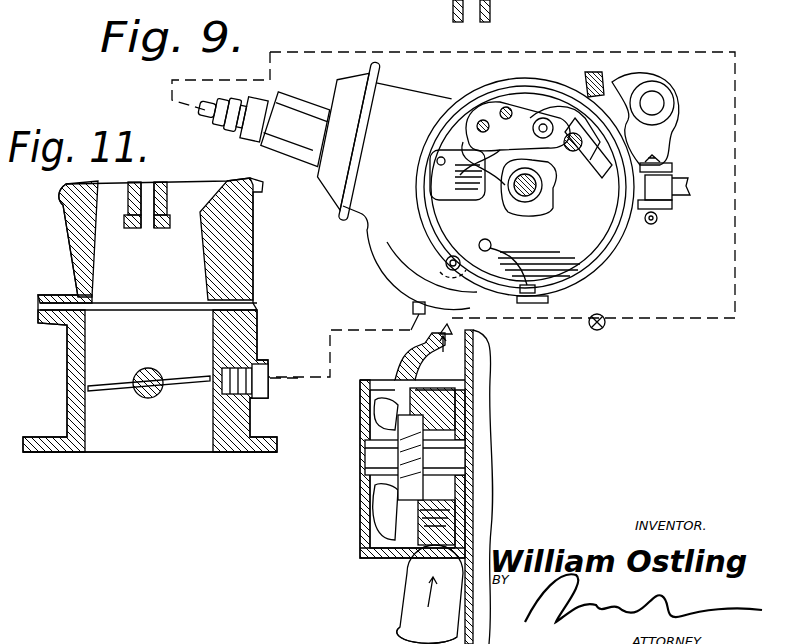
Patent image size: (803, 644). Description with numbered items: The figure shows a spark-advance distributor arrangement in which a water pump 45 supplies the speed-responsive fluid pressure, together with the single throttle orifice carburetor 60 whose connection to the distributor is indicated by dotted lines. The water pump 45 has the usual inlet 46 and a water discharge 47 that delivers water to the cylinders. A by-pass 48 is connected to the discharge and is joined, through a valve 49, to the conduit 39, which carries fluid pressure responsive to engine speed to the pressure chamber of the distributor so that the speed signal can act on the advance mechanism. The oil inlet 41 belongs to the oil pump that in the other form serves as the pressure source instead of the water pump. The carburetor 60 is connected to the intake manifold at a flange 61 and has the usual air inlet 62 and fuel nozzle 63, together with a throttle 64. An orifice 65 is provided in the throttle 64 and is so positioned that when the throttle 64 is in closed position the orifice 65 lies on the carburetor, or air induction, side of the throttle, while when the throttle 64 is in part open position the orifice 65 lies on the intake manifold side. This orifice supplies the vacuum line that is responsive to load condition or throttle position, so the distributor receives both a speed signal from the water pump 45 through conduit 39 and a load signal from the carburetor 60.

In FIG. 9, the conduit 39 is at (236, 116).
In FIG. 9, the oil inlet 41 is at (476, 16).
In FIG. 9, the water pump 45 is at (362, 502).
In FIG. 9, the inlet 46 is at (410, 601).
In FIG. 9, the water discharge 47 is at (425, 336).
In FIG. 9, the by-pass 48 is at (452, 323).
In FIG. 9, the valve 49 is at (600, 330).
In FIG. 11, the carburetor 60 is at (68, 369).
In FIG. 11, the flange 61 is at (62, 445).
In FIG. 11, the air inlet 62 is at (149, 220).
In FIG. 11, the fuel nozzle 63 is at (130, 203).
In FIG. 11, the throttle 64 is at (195, 384).
In FIG. 11, the orifice 65 is at (214, 386).